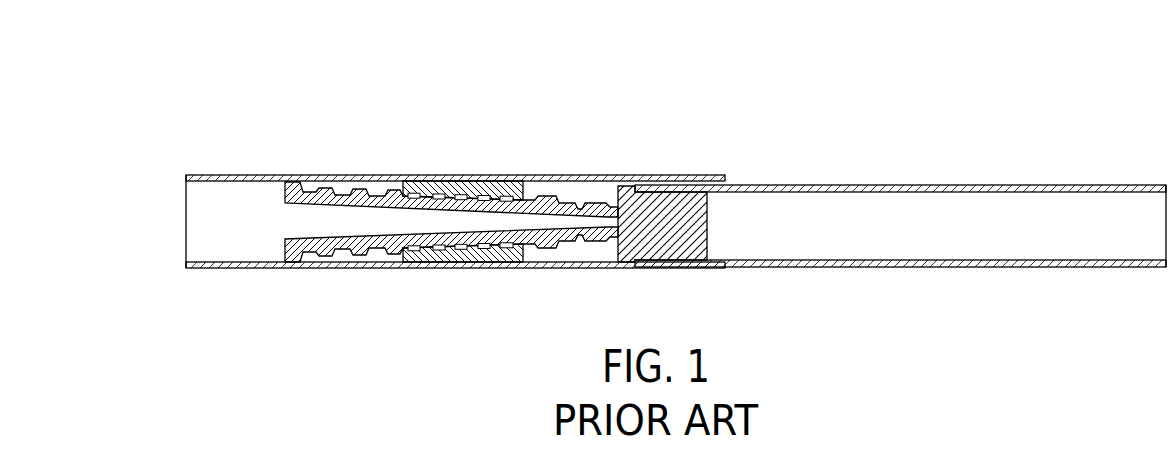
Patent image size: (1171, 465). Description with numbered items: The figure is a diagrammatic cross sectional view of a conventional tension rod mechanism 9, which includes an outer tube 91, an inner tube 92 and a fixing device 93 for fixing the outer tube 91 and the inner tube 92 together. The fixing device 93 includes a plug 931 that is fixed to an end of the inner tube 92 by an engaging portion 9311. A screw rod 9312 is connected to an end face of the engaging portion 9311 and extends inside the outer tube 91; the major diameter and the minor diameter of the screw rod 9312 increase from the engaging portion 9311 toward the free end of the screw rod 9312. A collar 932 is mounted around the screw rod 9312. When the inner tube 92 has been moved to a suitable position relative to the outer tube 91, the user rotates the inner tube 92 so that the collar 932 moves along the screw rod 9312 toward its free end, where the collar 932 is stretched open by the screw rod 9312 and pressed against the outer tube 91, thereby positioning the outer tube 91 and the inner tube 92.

The tension rod mechanism 9 is at (812, 126).
The outer tube 91 is at (278, 177).
The inner tube 92 is at (908, 186).
The fixing device 93 is at (549, 265).
The plug 931 is at (733, 118).
The engaging portion 9311 is at (678, 197).
The screw rod 9312 is at (550, 202).
The collar 932 is at (490, 182).